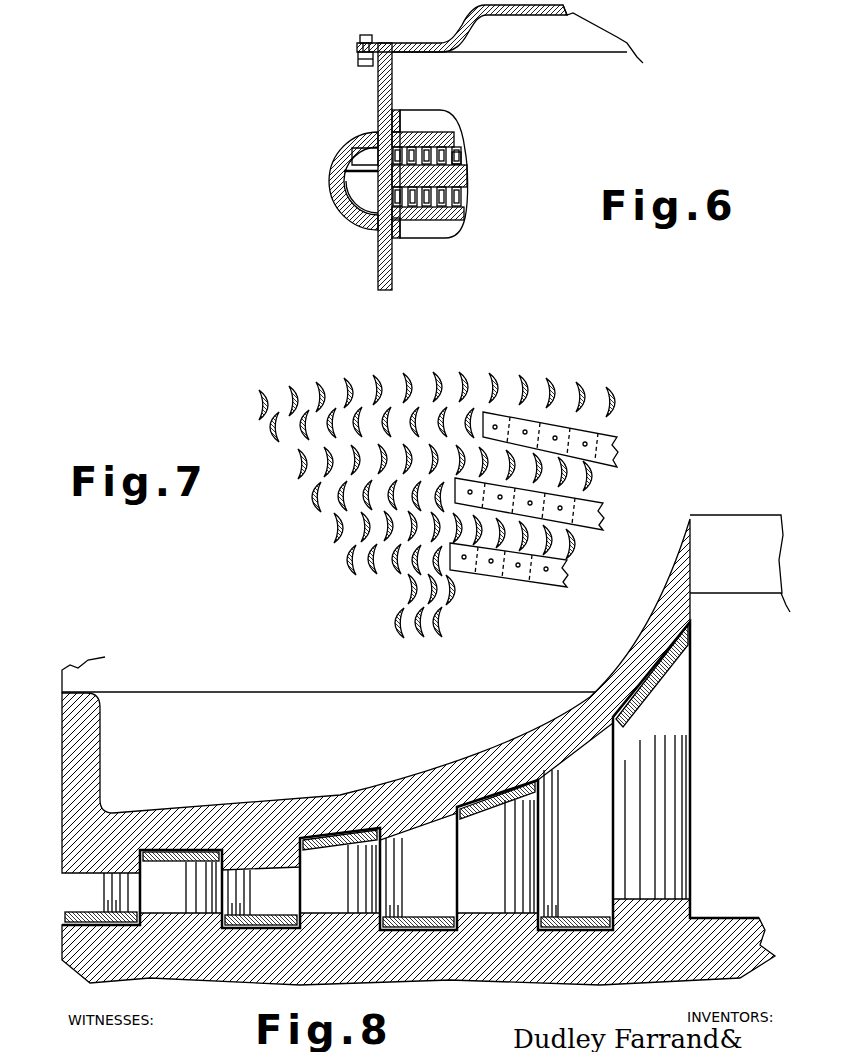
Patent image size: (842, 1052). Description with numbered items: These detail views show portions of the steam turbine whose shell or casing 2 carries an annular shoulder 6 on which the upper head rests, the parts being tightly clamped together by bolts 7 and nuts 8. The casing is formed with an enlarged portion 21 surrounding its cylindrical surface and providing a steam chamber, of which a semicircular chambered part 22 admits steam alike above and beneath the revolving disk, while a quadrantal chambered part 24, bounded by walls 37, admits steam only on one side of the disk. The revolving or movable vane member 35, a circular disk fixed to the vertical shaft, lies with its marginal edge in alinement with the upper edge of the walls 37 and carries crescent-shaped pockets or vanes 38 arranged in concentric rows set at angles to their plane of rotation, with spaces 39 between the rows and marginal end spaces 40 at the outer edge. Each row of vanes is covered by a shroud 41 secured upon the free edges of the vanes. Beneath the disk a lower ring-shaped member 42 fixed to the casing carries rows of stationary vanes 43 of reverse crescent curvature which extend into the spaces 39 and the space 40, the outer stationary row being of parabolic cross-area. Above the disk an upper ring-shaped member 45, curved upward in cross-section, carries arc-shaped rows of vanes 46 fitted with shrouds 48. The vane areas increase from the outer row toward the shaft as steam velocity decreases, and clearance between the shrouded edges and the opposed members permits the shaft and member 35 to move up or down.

In FIG. 6, the shell or casing 2 is at (378, 276).
In FIG. 6, the annular shoulder 6 is at (358, 50).
In FIG. 6, the bolts 7 is at (358, 62).
In FIG. 6, the nuts 8 is at (372, 36).
In FIG. 6, the enlarged portion 21 is at (343, 150).
In FIG. 6, the semicircular chambered part 22 is at (370, 135).
In FIG. 6, the quadrantal chambered part 24 is at (360, 197).
In FIG. 6, the revolving or movable vane member 35 is at (468, 180).
In FIG. 8, the revolving or movable vane member 35 is at (758, 925).
In FIG. 6, the walls 37 is at (345, 184).
In FIG. 6, the pockets or vanes 38 is at (460, 143).
In FIG. 7, the pockets or vanes 38 is at (286, 440).
In FIG. 8, the pockets or vanes 38 is at (432, 824).
In FIG. 8, the spaces 39 is at (240, 930).
In FIG. 8, the marginal end spaces 40 is at (130, 927).
In FIG. 6, the shroud 41 is at (440, 147).
In FIG. 7, the shroud 41 is at (618, 451).
In FIG. 8, the shroud 41 is at (693, 662).
In FIG. 6, the lower ring-shaped member 42 is at (467, 218).
In FIG. 6, the stationary vanes 43 is at (465, 200).
In FIG. 8, the upper ring-shaped member 45 is at (610, 672).
In FIG. 6, the vanes 46 is at (467, 152).
In FIG. 7, the vanes 46 is at (466, 377).
In FIG. 8, the vanes 46 is at (335, 843).
In FIG. 6, the shrouds 48 is at (467, 159).
In FIG. 8, the shrouds 48 is at (116, 918).